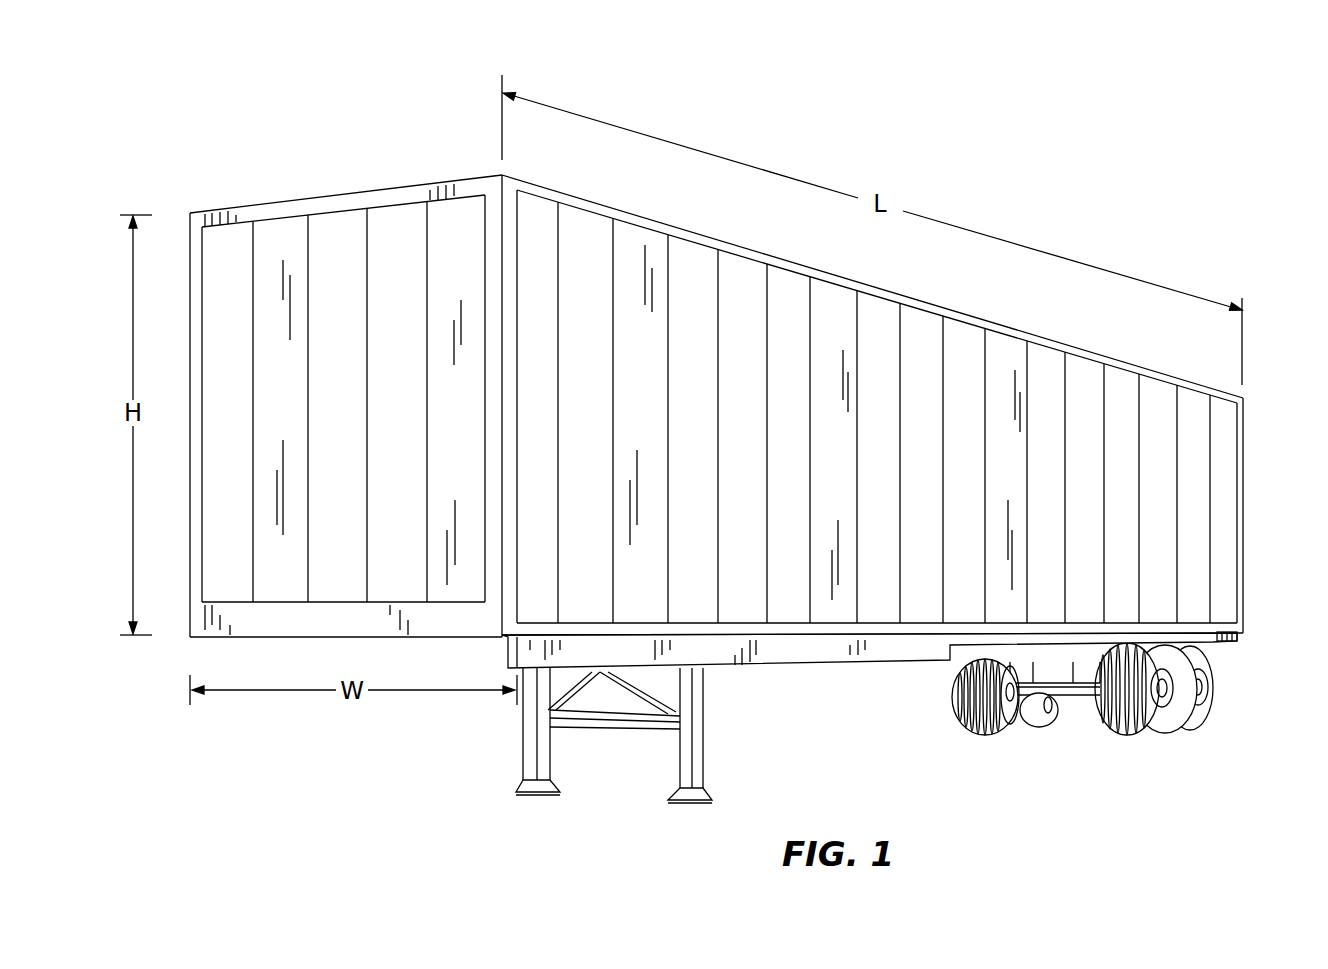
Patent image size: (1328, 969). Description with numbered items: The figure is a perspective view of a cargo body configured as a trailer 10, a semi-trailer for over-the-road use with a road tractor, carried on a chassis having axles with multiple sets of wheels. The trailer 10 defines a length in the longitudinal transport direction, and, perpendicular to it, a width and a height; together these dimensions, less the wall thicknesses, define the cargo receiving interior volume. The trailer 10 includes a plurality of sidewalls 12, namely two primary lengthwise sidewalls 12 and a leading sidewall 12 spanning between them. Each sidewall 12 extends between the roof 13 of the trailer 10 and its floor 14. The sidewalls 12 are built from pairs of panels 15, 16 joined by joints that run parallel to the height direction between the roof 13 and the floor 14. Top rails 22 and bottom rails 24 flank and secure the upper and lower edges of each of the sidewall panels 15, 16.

The trailer 10 is at (1082, 184).
The sidewall 12 is at (922, 350).
The roof 13 is at (425, 176).
The floor 14 is at (788, 670).
The panel 15 is at (707, 562).
The panel 16 is at (757, 562).
The top rail 22 is at (297, 207).
The bottom rail 24 is at (848, 630).